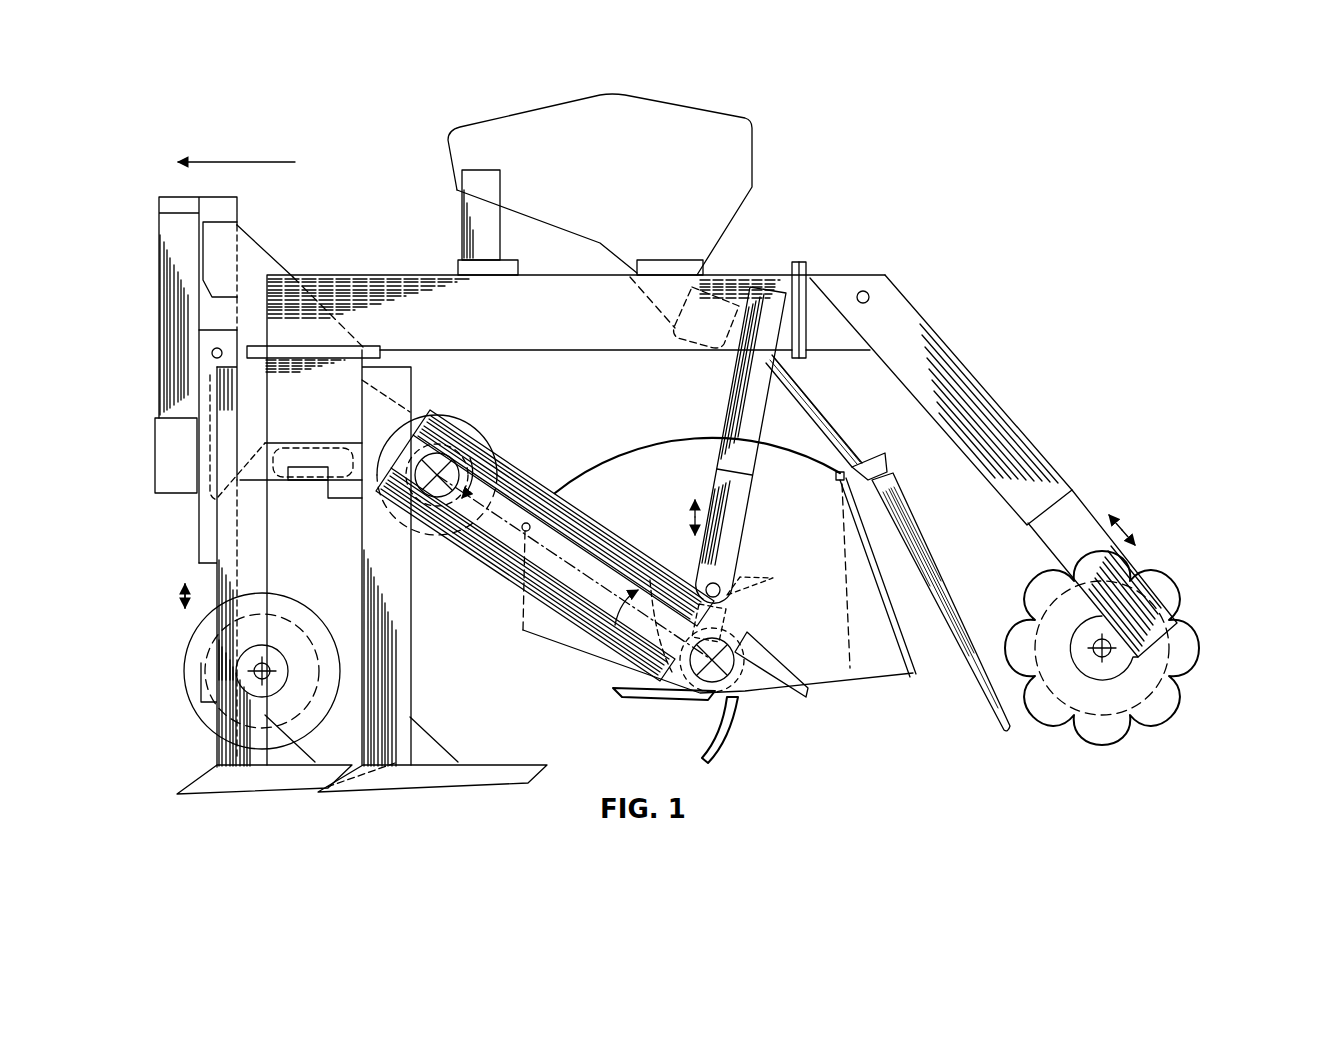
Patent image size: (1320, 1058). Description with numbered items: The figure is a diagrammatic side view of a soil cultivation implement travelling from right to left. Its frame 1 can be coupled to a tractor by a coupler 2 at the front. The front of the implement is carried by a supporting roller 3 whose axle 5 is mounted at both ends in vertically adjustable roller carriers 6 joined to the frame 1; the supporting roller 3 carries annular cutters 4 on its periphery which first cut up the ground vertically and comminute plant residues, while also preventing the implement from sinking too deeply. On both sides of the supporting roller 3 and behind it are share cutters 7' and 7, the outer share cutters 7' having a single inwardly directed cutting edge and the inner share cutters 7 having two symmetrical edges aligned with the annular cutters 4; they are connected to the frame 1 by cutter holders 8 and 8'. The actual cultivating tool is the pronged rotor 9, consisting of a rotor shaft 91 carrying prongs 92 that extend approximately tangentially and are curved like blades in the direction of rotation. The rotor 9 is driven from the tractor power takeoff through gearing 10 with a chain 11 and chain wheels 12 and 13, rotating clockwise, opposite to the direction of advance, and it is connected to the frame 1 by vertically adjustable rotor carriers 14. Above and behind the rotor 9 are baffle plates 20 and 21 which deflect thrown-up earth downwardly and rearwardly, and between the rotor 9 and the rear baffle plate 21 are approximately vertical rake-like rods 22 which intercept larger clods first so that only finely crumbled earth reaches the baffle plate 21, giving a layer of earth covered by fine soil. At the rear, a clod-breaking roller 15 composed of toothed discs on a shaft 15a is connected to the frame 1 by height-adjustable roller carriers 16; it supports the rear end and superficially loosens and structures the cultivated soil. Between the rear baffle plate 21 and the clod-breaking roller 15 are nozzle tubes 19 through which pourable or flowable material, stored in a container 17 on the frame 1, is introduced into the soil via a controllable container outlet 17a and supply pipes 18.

The frame 1 is at (737, 285).
The coupler 2 is at (170, 333).
The supporting roller 3 is at (185, 709).
The annular cutters 4 is at (302, 618).
The axle 5 is at (258, 668).
The roller carriers 6 is at (210, 572).
The share cutters 7 is at (432, 804).
The outer share cutters 7' is at (264, 806).
The cutter holder 8 is at (410, 558).
The cutter holder 8' is at (290, 492).
The pronged rotor 9 is at (776, 698).
The gearing 10 is at (482, 448).
The chain 11 is at (538, 480).
The chain wheel 12 is at (438, 500).
The chain wheel 13 is at (747, 650).
The rotor carriers 14 is at (723, 497).
The clod-breaking roller 15 is at (1043, 707).
The shaft 15a is at (1113, 643).
The roller carriers 16 is at (983, 418).
The container 17 is at (720, 140).
The container outlet 17a is at (707, 307).
The supply pipes 18 is at (853, 453).
The nozzle tubes 19 is at (940, 593).
The baffle plate 20 is at (634, 445).
The rear baffle plate 21 is at (872, 552).
The rods 22 is at (853, 637).
The rotor shaft 91 is at (712, 675).
The prongs 92 is at (733, 730).